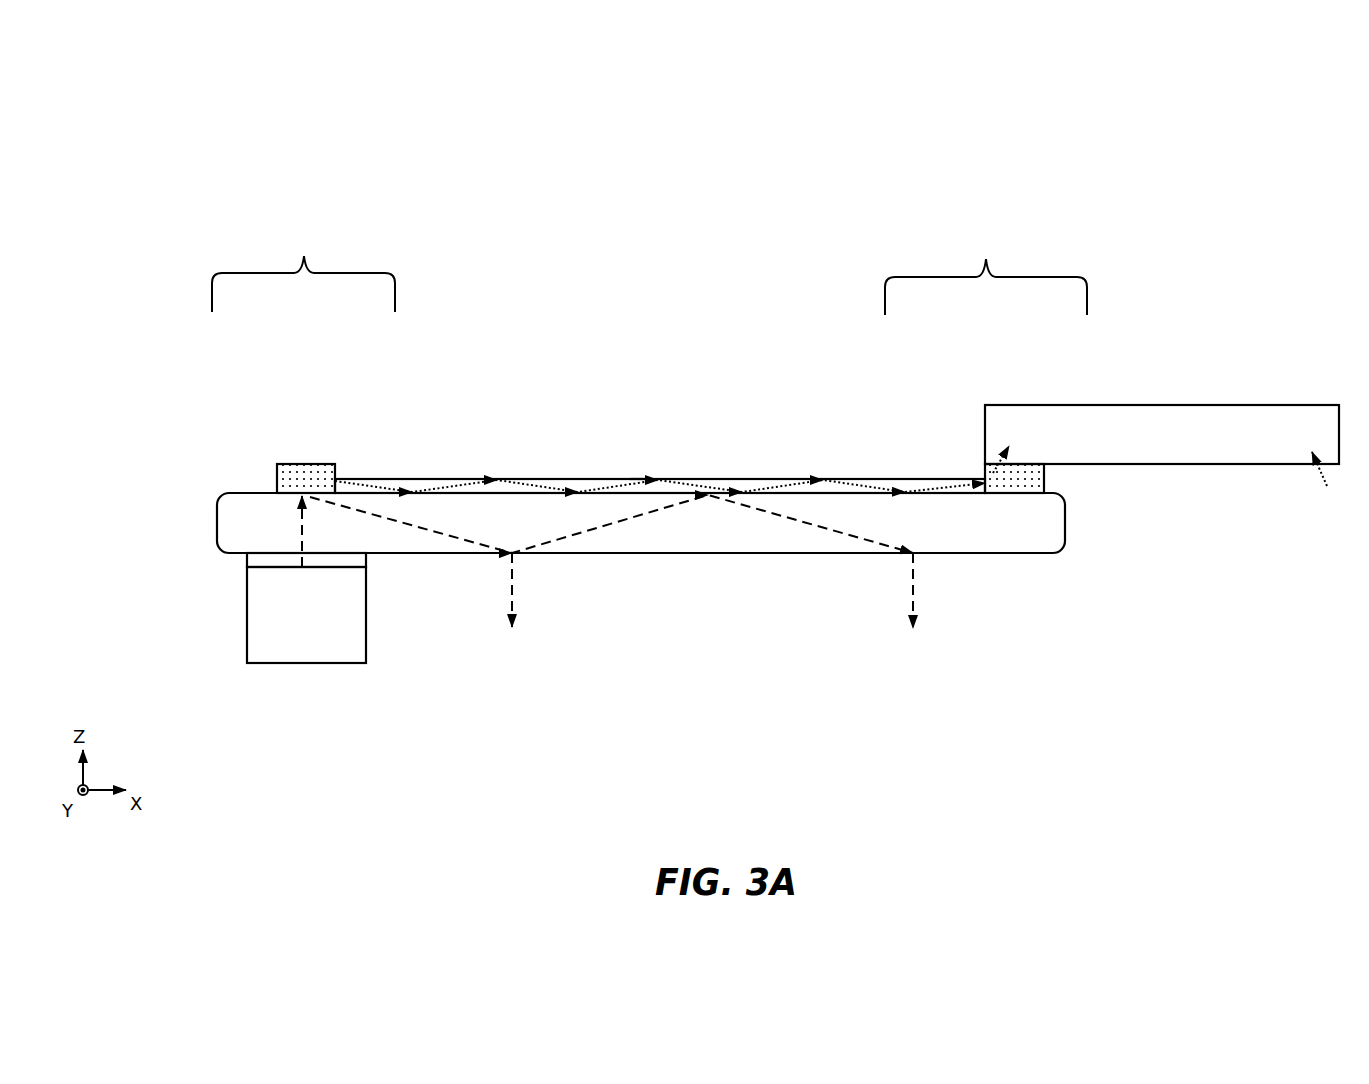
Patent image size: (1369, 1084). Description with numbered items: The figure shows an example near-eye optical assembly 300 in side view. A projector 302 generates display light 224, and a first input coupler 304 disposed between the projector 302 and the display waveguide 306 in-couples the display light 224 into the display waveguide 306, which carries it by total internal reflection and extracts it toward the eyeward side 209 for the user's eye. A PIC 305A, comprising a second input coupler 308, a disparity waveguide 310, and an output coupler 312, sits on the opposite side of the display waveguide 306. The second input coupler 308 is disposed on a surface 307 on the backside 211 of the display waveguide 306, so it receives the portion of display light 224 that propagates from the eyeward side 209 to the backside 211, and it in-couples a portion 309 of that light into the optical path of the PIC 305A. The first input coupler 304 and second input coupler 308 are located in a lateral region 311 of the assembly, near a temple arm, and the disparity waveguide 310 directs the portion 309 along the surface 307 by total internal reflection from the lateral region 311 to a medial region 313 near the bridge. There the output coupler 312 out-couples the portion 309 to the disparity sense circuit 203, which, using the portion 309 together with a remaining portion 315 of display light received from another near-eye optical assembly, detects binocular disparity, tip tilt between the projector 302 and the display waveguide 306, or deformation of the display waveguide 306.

The near-eye optical assembly 300 is at (1272, 172).
The lateral region 311 is at (301, 240).
The medial region 313 is at (985, 243).
The backside 211 is at (728, 318).
The eyeward side 209 is at (570, 659).
The display waveguide 306 is at (217, 499).
The first input coupler 304 is at (247, 556).
The projector 302 is at (247, 656).
The disparity waveguide 310 is at (557, 478).
The PIC 305A is at (420, 438).
The second input coupler 308 is at (307, 463).
The output coupler 312 is at (984, 476).
The portion of the display light 309 is at (390, 480).
The surface 307 is at (636, 477).
The display light 224 is at (302, 532).
The disparity sense circuit 203 is at (1155, 418).
The remaining portion of display light 315 is at (1320, 476).